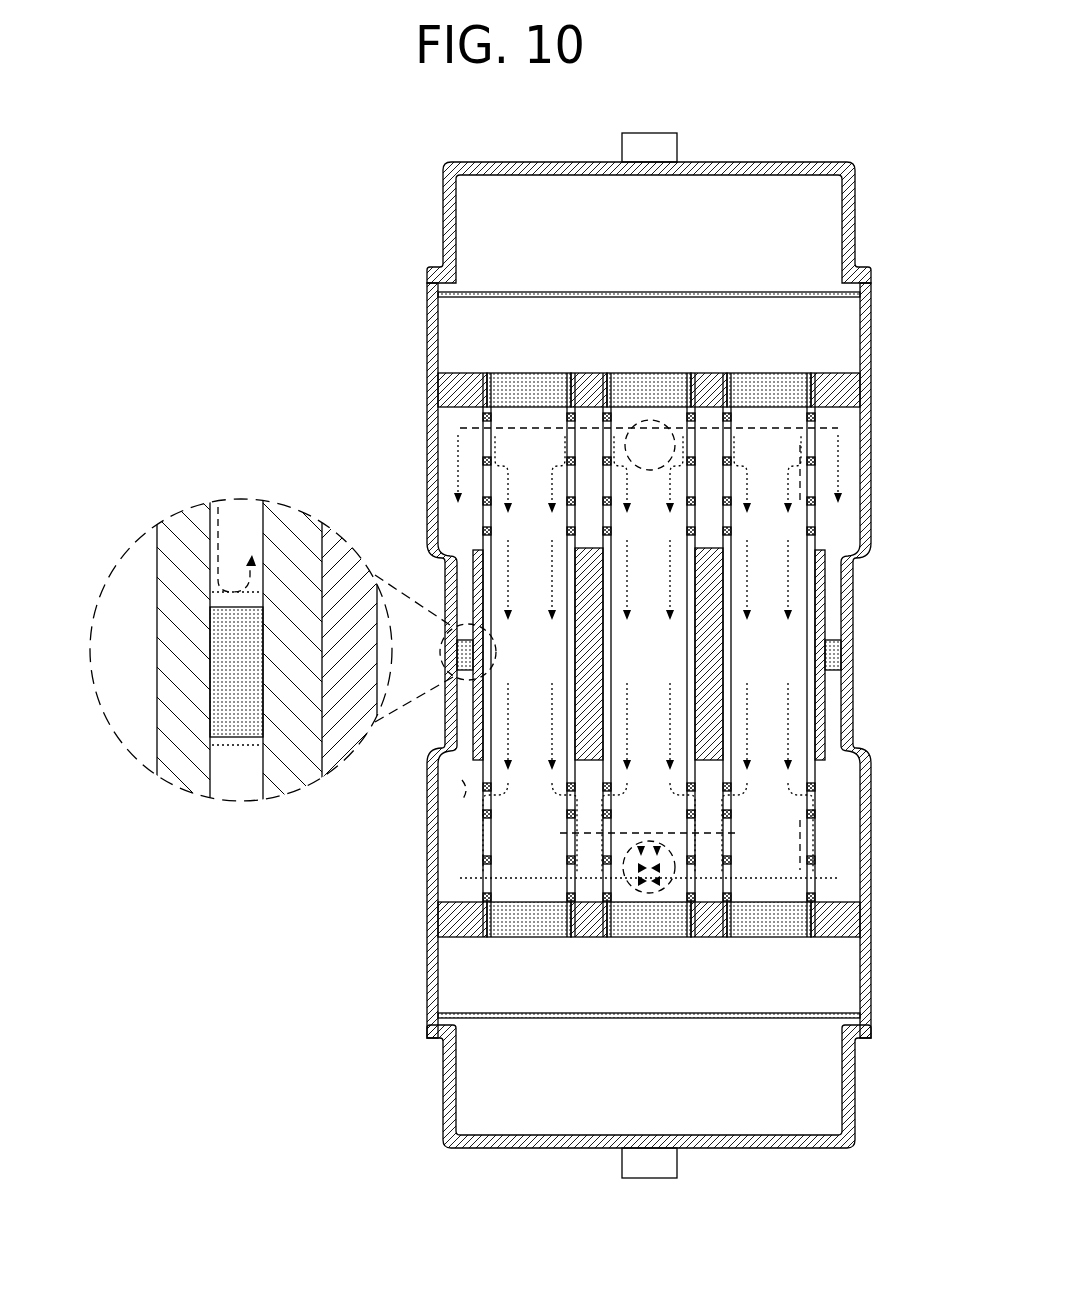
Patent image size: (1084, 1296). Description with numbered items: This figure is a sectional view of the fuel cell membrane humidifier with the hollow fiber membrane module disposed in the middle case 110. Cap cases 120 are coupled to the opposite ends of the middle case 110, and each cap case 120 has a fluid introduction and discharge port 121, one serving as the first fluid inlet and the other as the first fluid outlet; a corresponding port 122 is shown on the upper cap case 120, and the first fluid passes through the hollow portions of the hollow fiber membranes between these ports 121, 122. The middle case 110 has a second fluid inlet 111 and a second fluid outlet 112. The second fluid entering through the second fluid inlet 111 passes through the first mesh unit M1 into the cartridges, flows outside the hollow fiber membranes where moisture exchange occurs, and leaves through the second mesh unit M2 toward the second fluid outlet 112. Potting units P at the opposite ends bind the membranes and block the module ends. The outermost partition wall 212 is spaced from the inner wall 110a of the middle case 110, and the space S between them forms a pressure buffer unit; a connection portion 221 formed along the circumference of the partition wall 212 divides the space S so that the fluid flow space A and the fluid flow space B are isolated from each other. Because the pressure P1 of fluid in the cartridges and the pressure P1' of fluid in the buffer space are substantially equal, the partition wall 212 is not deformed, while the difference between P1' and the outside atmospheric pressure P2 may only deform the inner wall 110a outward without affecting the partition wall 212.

The cap case 120 is at (430, 189).
The upper electrode terminal 122 is at (638, 146).
The fluid introduction and discharge port 121 is at (638, 1163).
The middle case 110 is at (415, 375).
The second fluid inlet 111 is at (650, 422).
The second fluid outlet 112 is at (652, 940).
The potting unit P is at (785, 393).
The first mesh unit M1 is at (822, 484).
The second mesh unit M2 is at (822, 828).
The pressure of fluid flowing through the hollow fiber membrane cartridge P1 is at (648, 654).
The pressure of second fluid in the pressure buffer unit P1' is at (539, 510).
The atmospheric pressure P2 is at (413, 460).
The fluid flow space A is at (458, 527).
The fluid flow space B is at (462, 785).
The space S is at (212, 598).
The inner wall of the middle case 110a is at (214, 788).
The connection portion 221 is at (243, 720).
The partition wall 212 is at (293, 770).